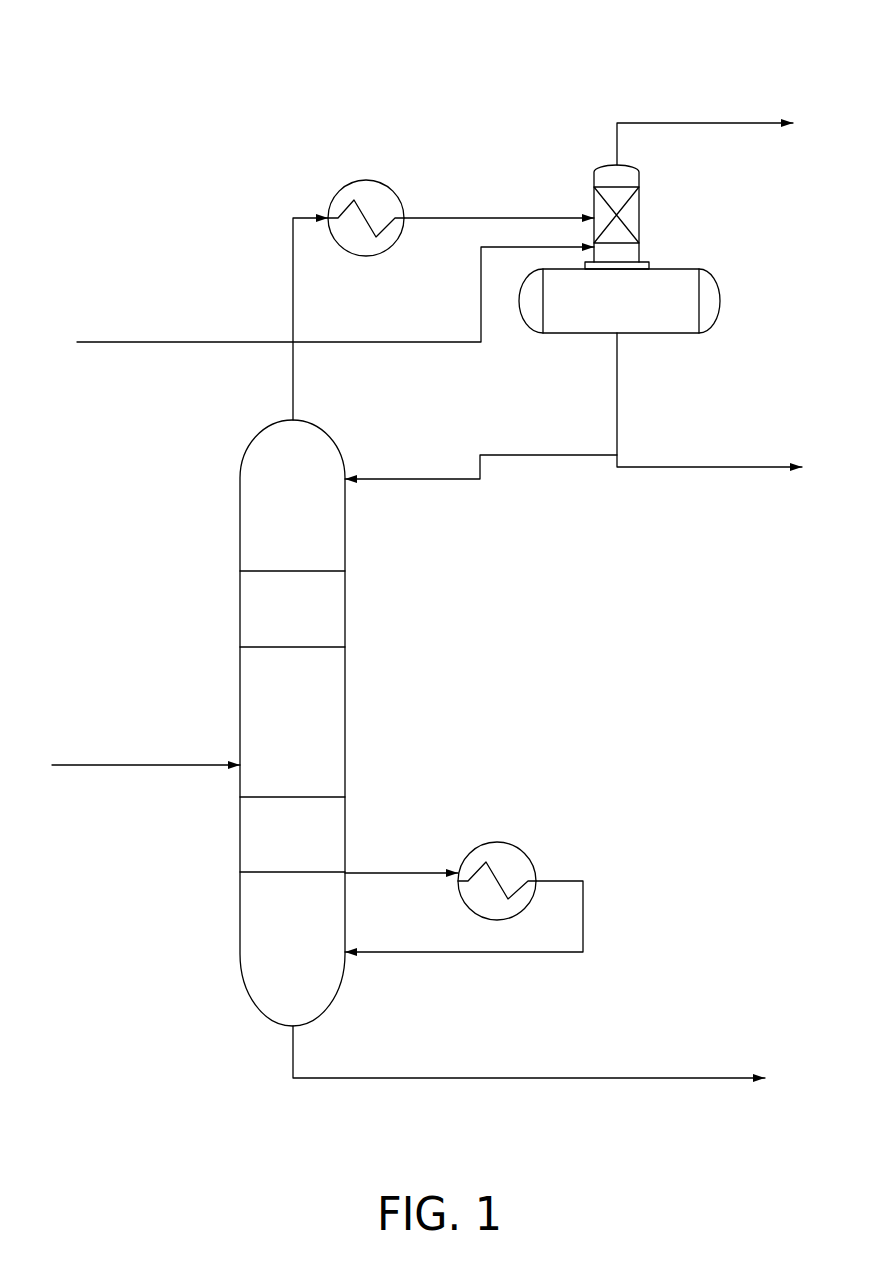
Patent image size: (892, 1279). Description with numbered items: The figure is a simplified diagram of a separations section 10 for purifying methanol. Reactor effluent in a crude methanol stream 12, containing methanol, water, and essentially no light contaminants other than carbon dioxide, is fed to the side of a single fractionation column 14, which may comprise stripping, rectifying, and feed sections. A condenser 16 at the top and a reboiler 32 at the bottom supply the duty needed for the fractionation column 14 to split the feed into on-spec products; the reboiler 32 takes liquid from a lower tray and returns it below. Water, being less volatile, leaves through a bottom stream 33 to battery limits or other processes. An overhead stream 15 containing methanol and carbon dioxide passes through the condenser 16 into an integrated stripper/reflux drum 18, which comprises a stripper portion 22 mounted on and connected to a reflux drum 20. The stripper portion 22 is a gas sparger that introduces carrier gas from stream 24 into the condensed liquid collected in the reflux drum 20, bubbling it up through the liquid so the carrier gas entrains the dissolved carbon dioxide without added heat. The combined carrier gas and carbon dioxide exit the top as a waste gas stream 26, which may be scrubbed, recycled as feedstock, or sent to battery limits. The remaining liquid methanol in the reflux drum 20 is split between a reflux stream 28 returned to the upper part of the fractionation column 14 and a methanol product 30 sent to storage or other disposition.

The separations section 10 is at (200, 1046).
The crude methanol stream 12 is at (108, 765).
The fractionation column 14 is at (240, 632).
The overhead stream 15 is at (293, 267).
The condenser 16 is at (345, 182).
The integrated stripper/reflux drum 18 is at (665, 228).
The reflux drum 20 is at (733, 296).
The stripper portion 22 is at (594, 190).
The carrier gas stream 24 is at (130, 340).
The waste gas stream 26 is at (673, 123).
The reflux stream 28 is at (480, 462).
The methanol product 30 is at (718, 467).
The reboiler 32 is at (492, 842).
The bottom stream 33 is at (553, 1078).